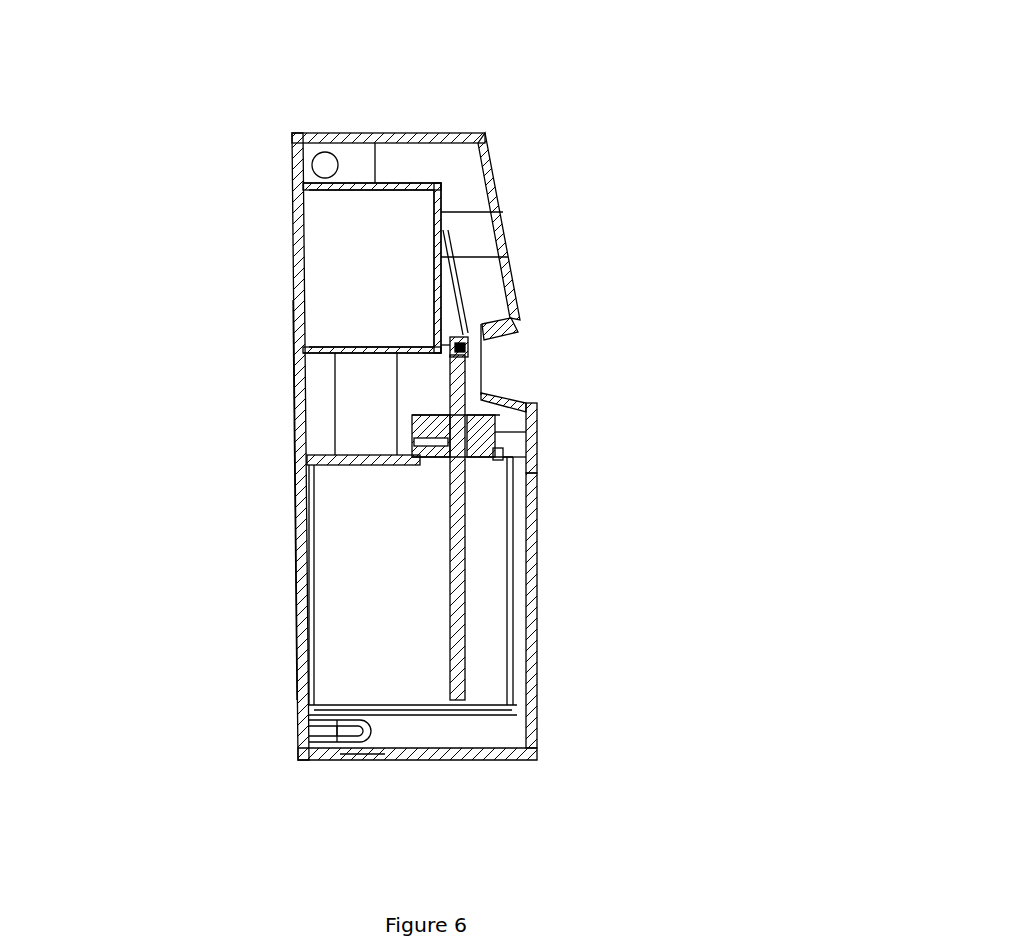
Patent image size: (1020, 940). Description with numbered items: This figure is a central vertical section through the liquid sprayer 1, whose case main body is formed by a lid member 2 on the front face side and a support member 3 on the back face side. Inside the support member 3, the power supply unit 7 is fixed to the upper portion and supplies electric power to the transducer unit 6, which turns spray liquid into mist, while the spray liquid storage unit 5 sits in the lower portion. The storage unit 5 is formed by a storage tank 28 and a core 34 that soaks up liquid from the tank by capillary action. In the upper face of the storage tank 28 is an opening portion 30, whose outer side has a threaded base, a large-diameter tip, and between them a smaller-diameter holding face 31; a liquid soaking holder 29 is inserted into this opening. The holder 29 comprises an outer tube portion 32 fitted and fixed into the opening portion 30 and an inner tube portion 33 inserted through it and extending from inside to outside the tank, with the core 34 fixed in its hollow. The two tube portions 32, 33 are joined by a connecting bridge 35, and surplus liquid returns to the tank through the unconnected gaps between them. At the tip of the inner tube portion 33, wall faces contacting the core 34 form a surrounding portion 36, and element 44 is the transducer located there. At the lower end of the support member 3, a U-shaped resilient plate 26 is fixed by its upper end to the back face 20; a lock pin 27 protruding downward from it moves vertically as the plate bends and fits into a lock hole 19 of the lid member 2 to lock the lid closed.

The liquid sprayer 1 is at (462, 83).
The lid member 2 is at (498, 137).
The support member 3 is at (292, 147).
The spray liquid storage unit 5 is at (526, 527).
The transducer unit 6 is at (458, 300).
The power supply unit 7 is at (441, 220).
The lock hole 19 is at (358, 760).
The back face 20 is at (296, 633).
The resilient plate 26 is at (378, 737).
The lock pin 27 is at (352, 762).
The storage tank 28 is at (514, 640).
The liquid soaking holder 29 is at (528, 402).
The opening portion 30 is at (528, 456).
The holding face 31 is at (503, 432).
The outer tube portion 32 is at (412, 428).
The inner tube portion 33 is at (450, 500).
The core 34 is at (466, 577).
The connecting bridge 35 is at (412, 445).
The surrounding portion 36 is at (470, 344).
The Transducer 44 is at (466, 357).